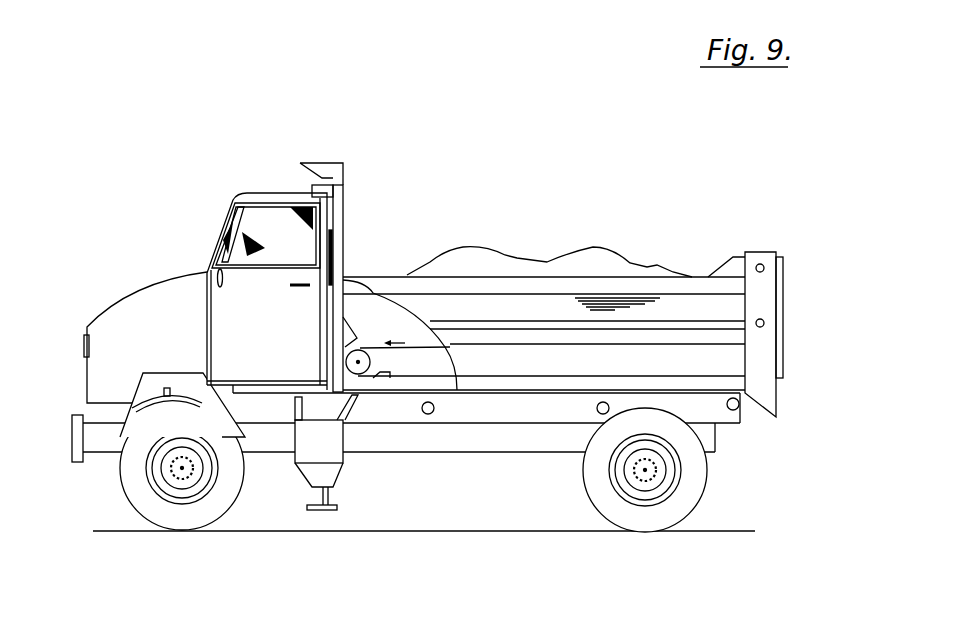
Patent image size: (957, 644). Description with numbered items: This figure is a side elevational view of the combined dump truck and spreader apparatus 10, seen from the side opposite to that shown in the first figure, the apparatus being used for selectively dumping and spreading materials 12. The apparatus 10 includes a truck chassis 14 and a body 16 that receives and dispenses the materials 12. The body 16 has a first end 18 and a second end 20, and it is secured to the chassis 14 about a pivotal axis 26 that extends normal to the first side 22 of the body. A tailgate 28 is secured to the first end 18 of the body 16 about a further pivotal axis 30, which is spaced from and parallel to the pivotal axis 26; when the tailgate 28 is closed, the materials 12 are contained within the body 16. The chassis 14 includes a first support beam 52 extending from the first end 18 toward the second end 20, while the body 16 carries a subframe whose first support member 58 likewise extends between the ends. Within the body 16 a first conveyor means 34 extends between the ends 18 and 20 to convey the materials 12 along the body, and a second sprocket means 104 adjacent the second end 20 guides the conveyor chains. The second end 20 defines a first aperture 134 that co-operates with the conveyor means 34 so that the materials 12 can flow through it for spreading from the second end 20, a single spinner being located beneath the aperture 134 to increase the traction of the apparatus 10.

The combined dump truck and spreader apparatus 10 is at (357, 145).
The materials 12 is at (522, 263).
The truck chassis 14 is at (466, 468).
The body 16 is at (724, 312).
The first end 18 is at (745, 275).
The second end 20 is at (348, 248).
The first side 22 is at (525, 370).
The pivotal axis 26 is at (738, 407).
The tailgate 28 is at (778, 353).
The further pivotal axis 30 is at (762, 266).
The first conveyor means 34 is at (438, 362).
The first support beam 52 is at (563, 413).
The first support member 58 is at (403, 410).
The second sprocket means 104 is at (346, 362).
The first aperture 134 is at (347, 330).